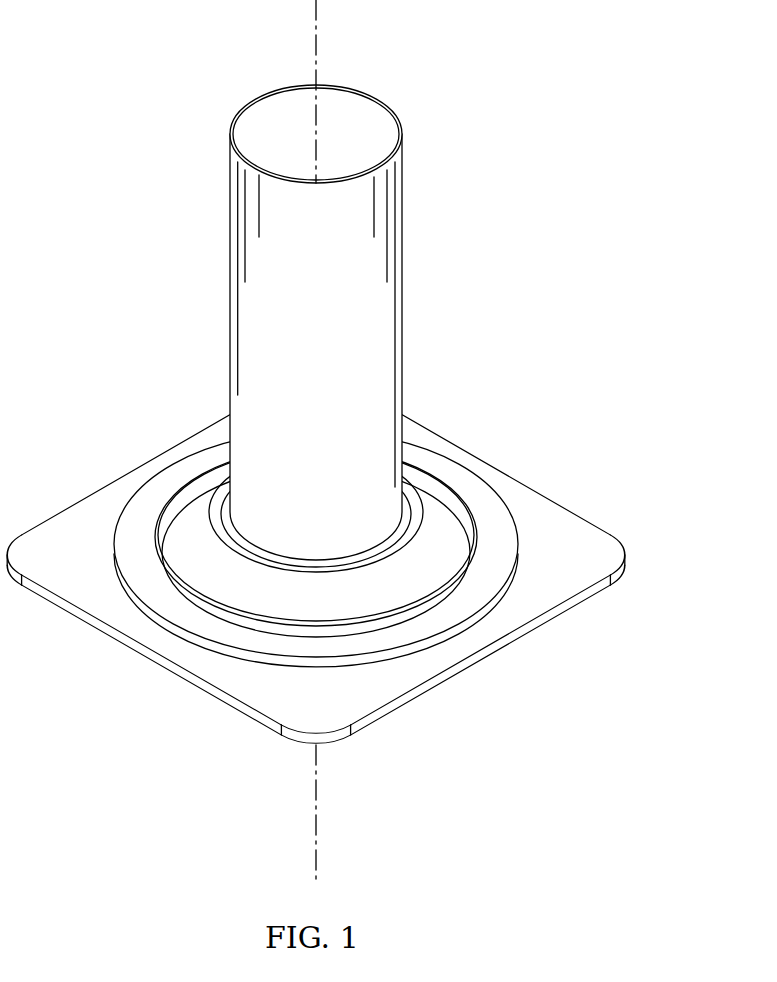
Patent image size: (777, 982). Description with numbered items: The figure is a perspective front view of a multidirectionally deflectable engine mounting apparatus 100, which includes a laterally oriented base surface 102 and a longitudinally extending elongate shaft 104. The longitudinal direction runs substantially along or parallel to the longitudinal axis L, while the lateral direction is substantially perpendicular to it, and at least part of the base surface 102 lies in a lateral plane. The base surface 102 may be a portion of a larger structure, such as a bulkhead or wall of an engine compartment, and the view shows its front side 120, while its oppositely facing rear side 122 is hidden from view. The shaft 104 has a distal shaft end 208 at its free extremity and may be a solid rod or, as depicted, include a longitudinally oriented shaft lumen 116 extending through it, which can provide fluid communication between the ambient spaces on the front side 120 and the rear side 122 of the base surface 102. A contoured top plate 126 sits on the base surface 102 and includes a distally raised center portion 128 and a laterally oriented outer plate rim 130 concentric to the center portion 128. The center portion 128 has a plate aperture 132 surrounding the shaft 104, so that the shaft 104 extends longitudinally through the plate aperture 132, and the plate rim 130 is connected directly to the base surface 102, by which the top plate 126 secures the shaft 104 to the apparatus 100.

The multidirectionally deflectable engine mounting apparatus 100 is at (325, 440).
The base surface 102 is at (325, 561).
The elongate shaft 104 is at (415, 213).
The shaft lumen 116 is at (363, 126).
The front side of the base surface 120 is at (296, 694).
The rear side of the base surface 122 is at (566, 576).
The contoured top plate 126 is at (553, 544).
The center portion 128 is at (357, 592).
The outer plate rim 130 is at (497, 511).
The plate aperture 132 is at (412, 493).
The distal shaft end 208 is at (214, 124).
The longitudinal axis L is at (316, 20).